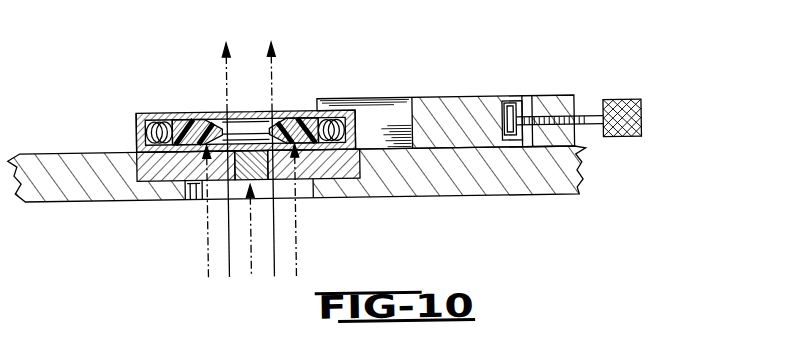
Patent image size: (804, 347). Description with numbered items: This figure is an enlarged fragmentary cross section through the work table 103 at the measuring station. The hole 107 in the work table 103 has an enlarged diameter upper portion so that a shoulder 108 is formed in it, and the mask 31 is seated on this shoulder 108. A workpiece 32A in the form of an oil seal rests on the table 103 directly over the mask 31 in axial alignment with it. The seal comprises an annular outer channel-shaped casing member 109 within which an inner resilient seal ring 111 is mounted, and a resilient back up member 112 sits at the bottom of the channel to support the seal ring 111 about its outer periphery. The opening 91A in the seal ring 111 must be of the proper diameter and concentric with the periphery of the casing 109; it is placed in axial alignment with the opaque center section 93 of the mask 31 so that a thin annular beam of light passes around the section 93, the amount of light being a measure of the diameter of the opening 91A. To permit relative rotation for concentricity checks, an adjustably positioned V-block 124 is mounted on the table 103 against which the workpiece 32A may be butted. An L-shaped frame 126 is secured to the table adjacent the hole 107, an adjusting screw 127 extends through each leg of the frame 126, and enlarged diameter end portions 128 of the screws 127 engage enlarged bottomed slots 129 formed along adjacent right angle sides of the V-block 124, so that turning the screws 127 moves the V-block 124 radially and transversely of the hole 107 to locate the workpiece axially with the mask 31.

The work table 103 is at (77, 190).
The mask 31 is at (162, 180).
The opaque center section 93 is at (250, 186).
The hole 107 is at (308, 182).
The shoulder 108 is at (350, 176).
The workpiece 32A is at (193, 105).
The annular outer channel-shaped casing member 109 is at (138, 132).
The resilient back up member 112 is at (161, 118).
The inner resilient seal ring 111 is at (306, 117).
The opening 91A is at (241, 116).
The V-block 124 is at (436, 100).
The L-shaped frame 126 is at (559, 99).
The enlarged bottomed slots 129 is at (506, 123).
The enlarged diameter end portions 128 is at (514, 111).
The adjusting screw 127 is at (644, 130).